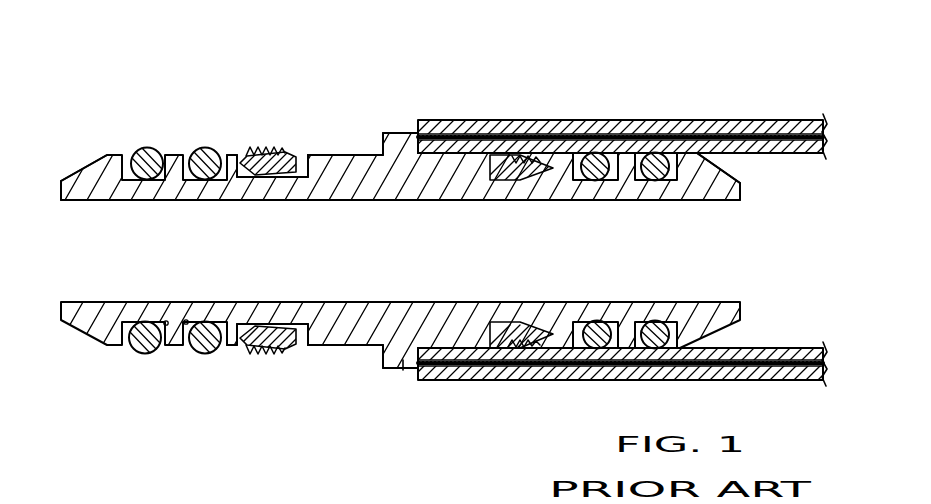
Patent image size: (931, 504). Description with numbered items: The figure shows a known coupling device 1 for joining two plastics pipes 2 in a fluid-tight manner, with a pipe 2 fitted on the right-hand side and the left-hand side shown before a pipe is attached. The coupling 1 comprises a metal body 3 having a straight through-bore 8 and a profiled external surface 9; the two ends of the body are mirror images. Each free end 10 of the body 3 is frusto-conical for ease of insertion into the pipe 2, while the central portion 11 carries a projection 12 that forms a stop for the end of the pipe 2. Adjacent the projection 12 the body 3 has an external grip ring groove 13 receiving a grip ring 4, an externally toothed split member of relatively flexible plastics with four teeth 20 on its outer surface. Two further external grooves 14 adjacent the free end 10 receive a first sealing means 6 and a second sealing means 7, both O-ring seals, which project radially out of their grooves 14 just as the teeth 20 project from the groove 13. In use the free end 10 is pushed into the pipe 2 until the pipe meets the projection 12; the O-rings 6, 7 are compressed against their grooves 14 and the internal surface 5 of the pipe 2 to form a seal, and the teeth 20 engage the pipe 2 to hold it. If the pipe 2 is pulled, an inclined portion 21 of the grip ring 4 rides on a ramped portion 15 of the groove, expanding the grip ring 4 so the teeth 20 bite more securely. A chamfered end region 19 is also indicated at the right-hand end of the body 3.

The coupling device 1 is at (236, 98).
The plastics pipe 2 is at (748, 120).
The metal body 3 is at (353, 155).
The grip ring 4 is at (288, 157).
The internal surface 5 is at (788, 153).
The first sealing means 6 is at (142, 354).
The second sealing means 7 is at (197, 354).
The through-bore 8 is at (697, 302).
The profiled external surface 9 is at (373, 155).
The free end 10 is at (61, 181).
The central portion 11 is at (368, 358).
The projection 12 is at (403, 372).
The grip ring groove 13 is at (307, 324).
The external grooves 14 is at (167, 321).
The ramped portion 15 is at (262, 178).
The chamfered end 19 is at (740, 188).
The teeth 20 is at (265, 357).
The inclined portion 21 is at (242, 172).